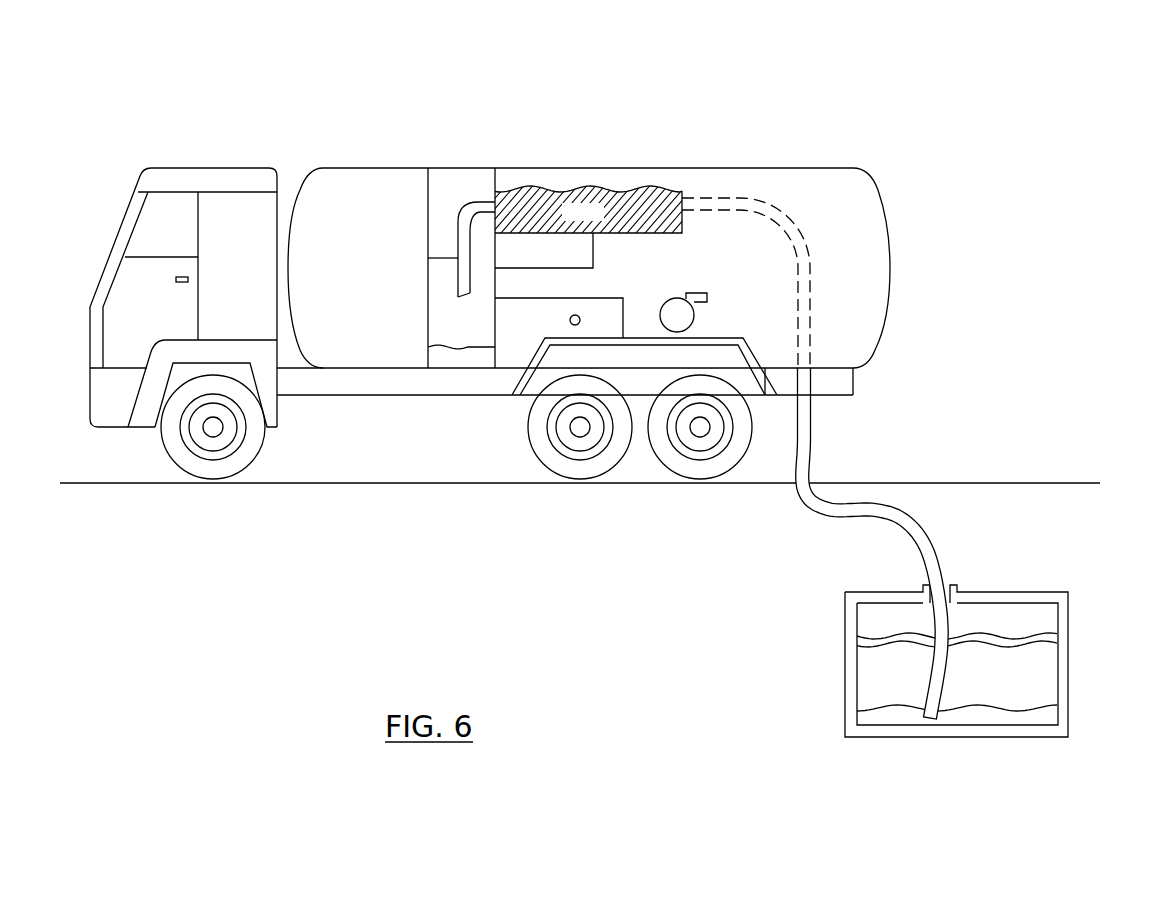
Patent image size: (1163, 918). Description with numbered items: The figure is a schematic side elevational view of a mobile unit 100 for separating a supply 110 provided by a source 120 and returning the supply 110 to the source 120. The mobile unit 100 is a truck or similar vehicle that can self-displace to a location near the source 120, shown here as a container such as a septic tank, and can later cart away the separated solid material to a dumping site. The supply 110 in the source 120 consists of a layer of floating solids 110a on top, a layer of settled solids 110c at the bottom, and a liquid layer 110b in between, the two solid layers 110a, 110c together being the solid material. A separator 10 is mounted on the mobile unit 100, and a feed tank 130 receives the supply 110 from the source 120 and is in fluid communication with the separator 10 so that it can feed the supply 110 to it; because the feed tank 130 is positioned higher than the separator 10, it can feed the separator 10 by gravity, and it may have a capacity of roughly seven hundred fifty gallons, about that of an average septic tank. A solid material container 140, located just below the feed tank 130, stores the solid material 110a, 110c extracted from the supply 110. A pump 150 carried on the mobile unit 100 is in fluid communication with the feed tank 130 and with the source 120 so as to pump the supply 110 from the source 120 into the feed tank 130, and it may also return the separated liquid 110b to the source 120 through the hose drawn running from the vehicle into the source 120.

The mobile unit 100 is at (365, 132).
The separator 10 is at (455, 167).
The feed tank 130 is at (664, 167).
The supply 110 is at (566, 226).
The solid material container 140 is at (525, 264).
The pump 150 is at (653, 331).
The layer of floating solids 110a is at (442, 261).
The liquid layer 110b is at (477, 331).
The layer of settled solids 110c is at (462, 352).
The source 120 is at (1071, 671).